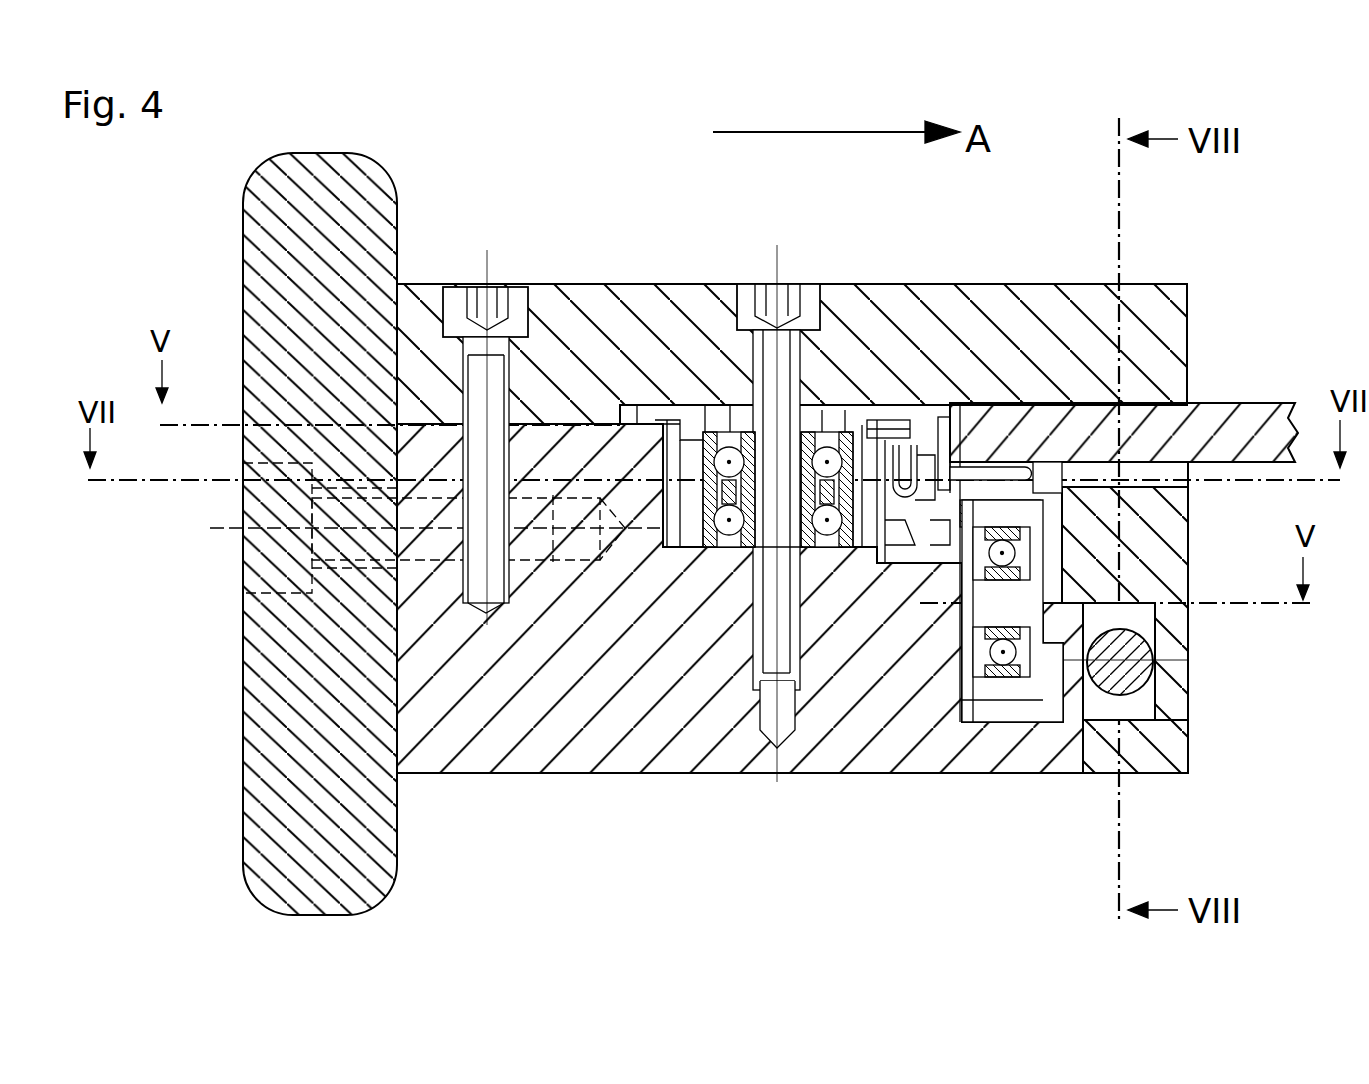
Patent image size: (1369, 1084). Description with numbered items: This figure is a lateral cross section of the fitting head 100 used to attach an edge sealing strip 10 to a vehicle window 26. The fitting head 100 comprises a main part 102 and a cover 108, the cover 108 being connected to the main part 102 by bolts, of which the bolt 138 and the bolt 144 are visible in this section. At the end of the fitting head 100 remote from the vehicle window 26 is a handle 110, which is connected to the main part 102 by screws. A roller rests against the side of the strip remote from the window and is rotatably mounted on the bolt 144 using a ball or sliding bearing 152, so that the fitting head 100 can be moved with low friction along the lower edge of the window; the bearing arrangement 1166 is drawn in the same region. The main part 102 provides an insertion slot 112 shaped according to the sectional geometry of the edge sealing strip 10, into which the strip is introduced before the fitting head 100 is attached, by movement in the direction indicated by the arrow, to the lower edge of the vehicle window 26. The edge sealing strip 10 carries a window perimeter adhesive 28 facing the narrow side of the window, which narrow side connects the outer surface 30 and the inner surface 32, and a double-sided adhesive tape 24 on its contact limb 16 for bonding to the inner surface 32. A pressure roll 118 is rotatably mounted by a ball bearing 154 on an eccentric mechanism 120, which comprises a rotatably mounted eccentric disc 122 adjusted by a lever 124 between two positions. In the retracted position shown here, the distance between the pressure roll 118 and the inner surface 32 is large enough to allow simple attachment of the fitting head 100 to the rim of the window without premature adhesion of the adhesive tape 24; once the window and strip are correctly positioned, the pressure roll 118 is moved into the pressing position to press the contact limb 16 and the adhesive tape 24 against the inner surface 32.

The fitting head 100 is at (607, 163).
The handle 110 is at (248, 233).
The cover 108 is at (872, 300).
The main part 102 is at (668, 762).
The bolt 138 is at (511, 298).
The bolt 144 is at (803, 292).
The bearing housing 1166 is at (700, 405).
The ball or sliding bearing 152 is at (712, 548).
The edge sealing strip 10 is at (885, 567).
The window perimeter adhesive 28 is at (957, 405).
The contact limb 16 is at (1000, 455).
The double-sided adhesive tape 24 is at (1013, 420).
The vehicle window 26 is at (1262, 405).
The outer surface 30 is at (1192, 406).
The inner surface 32 is at (1212, 470).
The insertion slot 112 is at (1197, 487).
The eccentric disc 122 is at (1183, 580).
The eccentric mechanism 120 is at (1200, 663).
The lever 124 is at (1190, 717).
The pressure roll 118 is at (983, 700).
The ball bearing 154 is at (1038, 712).